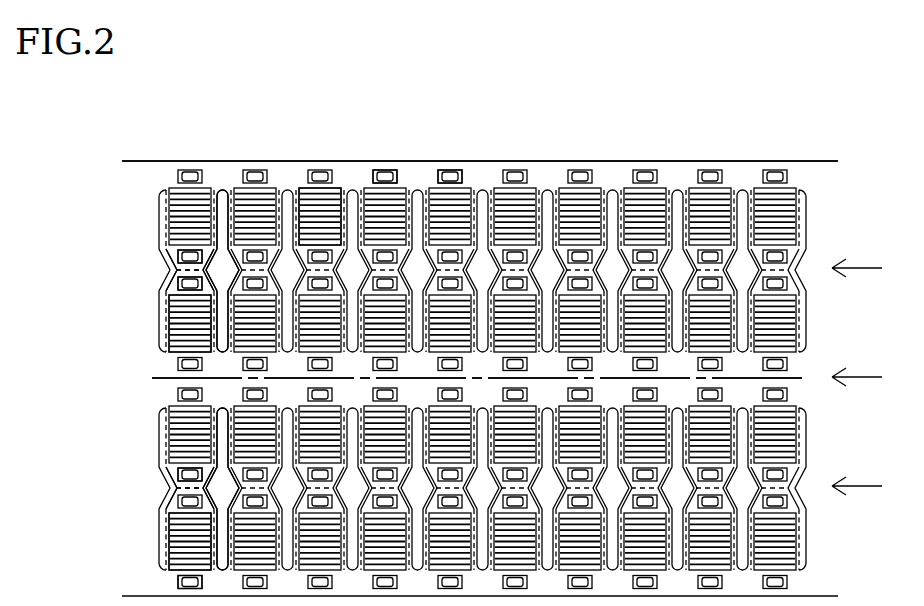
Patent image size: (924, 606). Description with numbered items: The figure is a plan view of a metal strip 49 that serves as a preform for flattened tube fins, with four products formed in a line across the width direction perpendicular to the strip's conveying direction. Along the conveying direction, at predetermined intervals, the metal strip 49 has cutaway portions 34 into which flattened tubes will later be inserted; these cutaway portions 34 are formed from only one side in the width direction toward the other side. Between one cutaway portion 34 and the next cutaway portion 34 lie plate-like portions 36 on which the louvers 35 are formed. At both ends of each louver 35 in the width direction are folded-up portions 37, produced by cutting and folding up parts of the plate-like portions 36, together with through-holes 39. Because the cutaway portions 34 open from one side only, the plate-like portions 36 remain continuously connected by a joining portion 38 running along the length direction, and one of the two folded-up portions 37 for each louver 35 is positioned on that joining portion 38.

The cutaway portion 34 is at (218, 315).
The louver 35 is at (327, 207).
The plate-like portion 36 is at (205, 250).
The folded-up portion 37 is at (457, 176).
The joining portion 38 is at (623, 168).
The through-hole 39 is at (387, 176).
The metal strip 49 is at (757, 149).